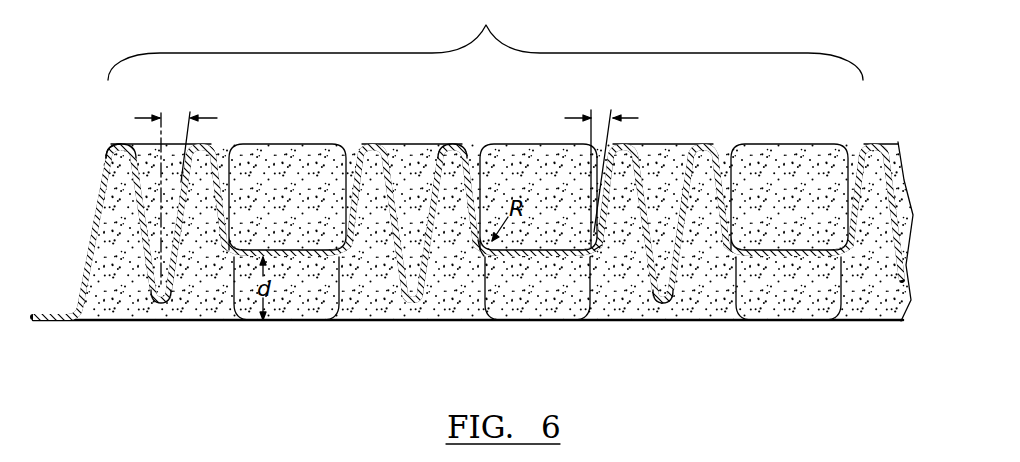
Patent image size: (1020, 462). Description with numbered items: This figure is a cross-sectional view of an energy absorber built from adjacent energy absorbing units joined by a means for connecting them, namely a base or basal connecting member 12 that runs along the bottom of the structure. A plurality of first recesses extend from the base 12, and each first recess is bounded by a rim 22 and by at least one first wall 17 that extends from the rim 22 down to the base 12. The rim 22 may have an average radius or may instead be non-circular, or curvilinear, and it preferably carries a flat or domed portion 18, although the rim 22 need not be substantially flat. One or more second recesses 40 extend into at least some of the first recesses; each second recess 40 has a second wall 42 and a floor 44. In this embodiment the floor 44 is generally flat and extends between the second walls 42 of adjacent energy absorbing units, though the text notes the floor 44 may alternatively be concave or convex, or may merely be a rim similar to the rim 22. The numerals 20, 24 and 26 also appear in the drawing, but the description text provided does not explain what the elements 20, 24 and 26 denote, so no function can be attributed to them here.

The base 12 is at (57, 323).
The first wall 17 is at (98, 188).
The flat or domed portion 18 is at (138, 143).
The fin top 20 is at (438, 147).
The rim 22 is at (110, 148).
The fin side wall 24 is at (591, 137).
The filler material 26 is at (785, 297).
The second recess 40 is at (180, 293).
The second wall 42 is at (195, 183).
The floor 44 is at (158, 324).